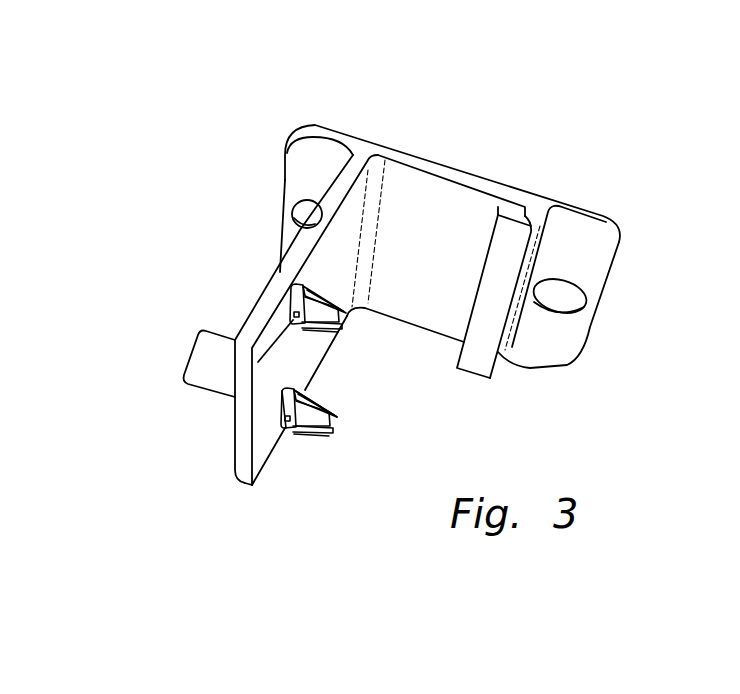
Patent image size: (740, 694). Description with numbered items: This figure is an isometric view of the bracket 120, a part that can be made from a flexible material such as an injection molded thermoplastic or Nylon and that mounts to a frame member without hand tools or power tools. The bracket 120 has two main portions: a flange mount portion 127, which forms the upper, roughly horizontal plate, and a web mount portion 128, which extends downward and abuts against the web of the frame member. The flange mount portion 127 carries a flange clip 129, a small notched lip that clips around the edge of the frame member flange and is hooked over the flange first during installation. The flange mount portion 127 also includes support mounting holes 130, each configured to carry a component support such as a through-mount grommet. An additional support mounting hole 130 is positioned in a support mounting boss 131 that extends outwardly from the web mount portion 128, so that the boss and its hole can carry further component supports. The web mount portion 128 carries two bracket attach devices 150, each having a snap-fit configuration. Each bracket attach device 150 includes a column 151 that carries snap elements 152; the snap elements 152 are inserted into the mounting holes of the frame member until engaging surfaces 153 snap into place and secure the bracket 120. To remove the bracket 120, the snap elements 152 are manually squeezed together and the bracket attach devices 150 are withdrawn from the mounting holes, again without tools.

The bracket 120 is at (388, 100).
The flange mount portion 127 is at (452, 167).
The web mount portion 128 is at (280, 280).
The flange clip 129 is at (531, 222).
The support mounting hole 130 is at (292, 220).
The support mounting boss 131 is at (204, 398).
The bracket attach device 150 is at (330, 268).
The column 151 is at (286, 424).
The snap element 152 is at (342, 401).
The engaging surface 153 is at (290, 391).